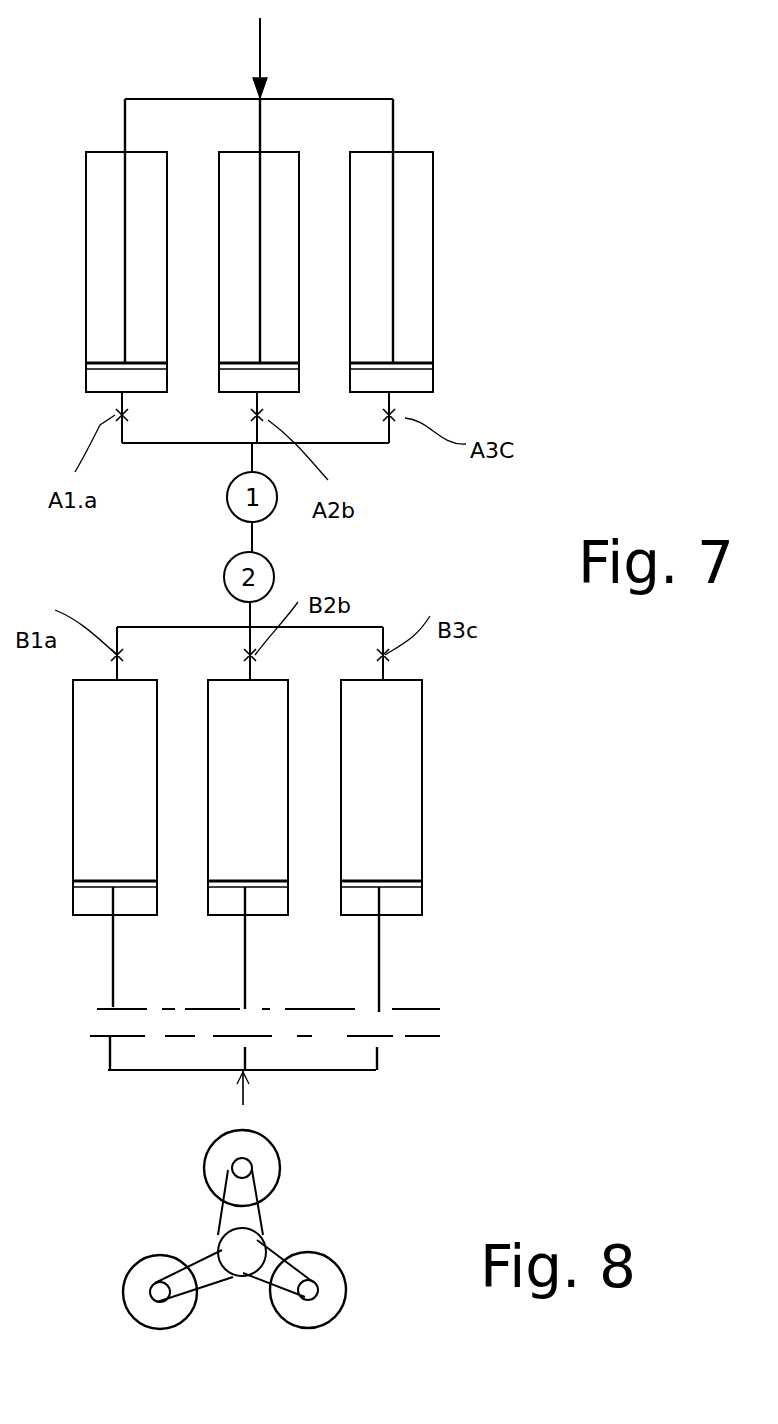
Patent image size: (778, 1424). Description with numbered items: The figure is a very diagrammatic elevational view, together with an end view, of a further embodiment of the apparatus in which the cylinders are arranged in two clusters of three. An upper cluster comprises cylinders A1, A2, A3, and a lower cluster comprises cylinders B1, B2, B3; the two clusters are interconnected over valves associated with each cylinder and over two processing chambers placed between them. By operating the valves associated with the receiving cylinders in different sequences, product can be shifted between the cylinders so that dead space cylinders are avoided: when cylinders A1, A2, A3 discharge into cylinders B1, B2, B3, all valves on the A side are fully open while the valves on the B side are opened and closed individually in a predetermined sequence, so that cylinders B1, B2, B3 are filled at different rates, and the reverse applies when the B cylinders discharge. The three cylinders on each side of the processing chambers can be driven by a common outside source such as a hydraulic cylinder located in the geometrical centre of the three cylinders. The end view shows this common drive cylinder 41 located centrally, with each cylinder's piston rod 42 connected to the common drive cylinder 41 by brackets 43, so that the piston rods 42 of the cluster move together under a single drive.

In FIG. 8, the common drive cylinder 41 is at (244, 1250).
In FIG. 7, the piston rod 42 is at (390, 135).
In FIG. 8, the piston rod 42 is at (318, 1295).
In FIG. 7, the bracket 43 is at (310, 1072).
In FIG. 8, the bracket 43 is at (200, 1272).
In FIG. 7, the cylinder A1 is at (126, 272).
In FIG. 7, the cylinder A2 is at (259, 272).
In FIG. 7, the cylinder A3 is at (391, 272).
In FIG. 7, the cylinder B1 is at (115, 797).
In FIG. 7, the cylinder B2 is at (248, 797).
In FIG. 7, the cylinder B3 is at (381, 797).